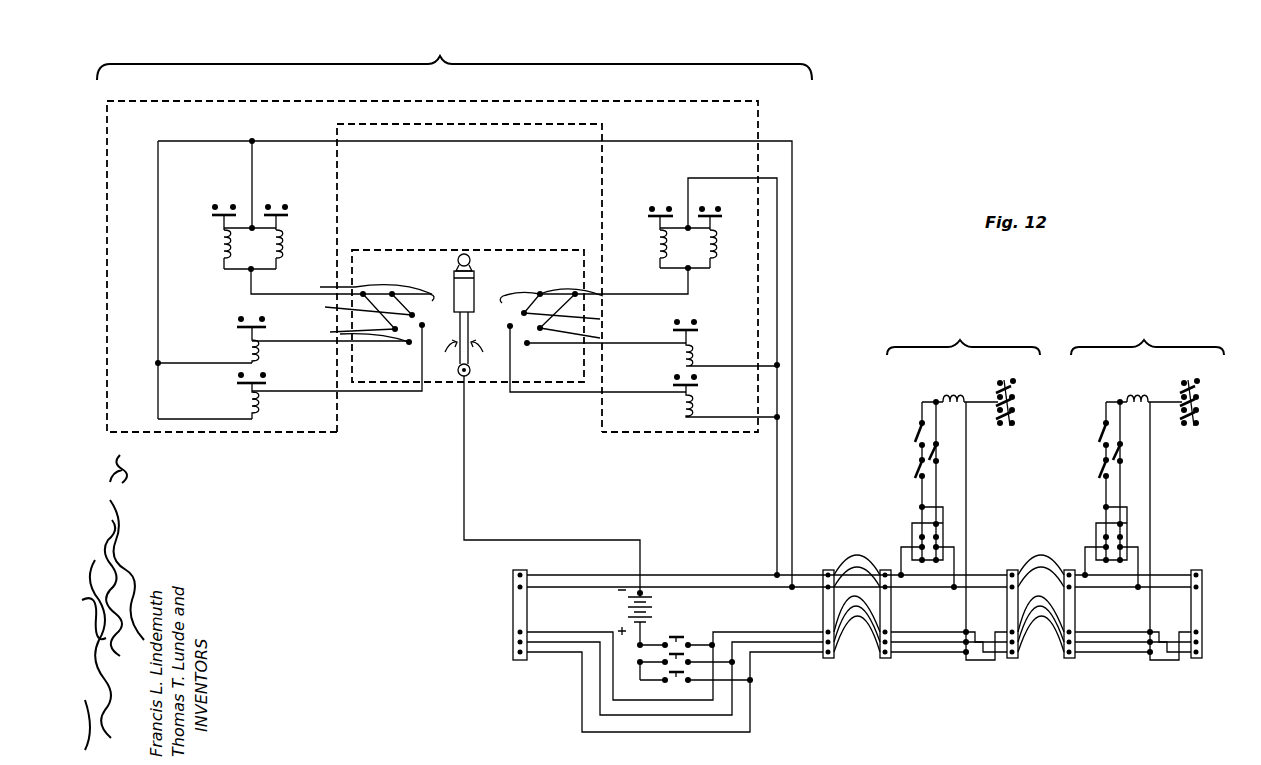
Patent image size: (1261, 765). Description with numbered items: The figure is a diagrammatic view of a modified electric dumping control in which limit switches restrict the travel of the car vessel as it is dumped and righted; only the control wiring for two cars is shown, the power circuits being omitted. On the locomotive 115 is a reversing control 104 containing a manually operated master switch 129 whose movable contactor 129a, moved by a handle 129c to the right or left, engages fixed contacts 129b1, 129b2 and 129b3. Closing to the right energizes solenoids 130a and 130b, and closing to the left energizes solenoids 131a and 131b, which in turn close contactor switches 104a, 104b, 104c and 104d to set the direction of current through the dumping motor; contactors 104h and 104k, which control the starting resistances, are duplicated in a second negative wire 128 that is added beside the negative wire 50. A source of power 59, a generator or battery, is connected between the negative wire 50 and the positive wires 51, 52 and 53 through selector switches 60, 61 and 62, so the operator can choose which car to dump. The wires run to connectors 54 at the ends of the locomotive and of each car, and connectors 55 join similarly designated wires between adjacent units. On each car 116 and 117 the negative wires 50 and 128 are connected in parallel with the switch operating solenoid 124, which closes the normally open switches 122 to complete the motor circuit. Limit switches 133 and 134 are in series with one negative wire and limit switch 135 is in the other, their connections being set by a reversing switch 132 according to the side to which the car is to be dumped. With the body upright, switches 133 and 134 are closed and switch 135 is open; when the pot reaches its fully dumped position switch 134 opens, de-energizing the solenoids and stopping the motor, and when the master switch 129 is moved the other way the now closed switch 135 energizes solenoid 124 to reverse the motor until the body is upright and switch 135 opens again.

The locomotive 115 is at (454, 57).
The reversing control 104 is at (548, 101).
The contactor switch 104a is at (646, 206).
The contactor switch 104b is at (210, 209).
The contactor switch 104c is at (303, 191).
The contactor switch 104d is at (727, 199).
The contactor 104h is at (236, 384).
The contactor 104k is at (236, 325).
The solenoid 131a is at (222, 240).
The solenoid 131b is at (279, 244).
The solenoid 130a is at (656, 242).
The solenoid 130b is at (715, 256).
The master switch 129 is at (480, 248).
The movable contactor 129a is at (480, 303).
The fixed contact 129b1 is at (605, 300).
The fixed contact 129b2 is at (330, 308).
The fixed contact 129b3 is at (336, 328).
The handle 129c is at (456, 249).
The second negative wire 128 is at (726, 178).
The negative wire 50 is at (794, 252).
The positive wire 51 is at (627, 732).
The positive wire 52 is at (676, 716).
The positive wire 53 is at (728, 733).
The connector 54 is at (519, 662).
The connector 55 is at (945, 597).
The source of power 59 is at (630, 602).
The switch 60 is at (684, 636).
The switch 61 is at (662, 658).
The switch 62 is at (678, 682).
The car 116 is at (963, 484).
The car 117 is at (1147, 484).
The solenoid 124 is at (950, 398).
The normally open switch 122 is at (1004, 428).
The reversing switch 132 is at (912, 540).
The limit switch 133 is at (916, 466).
The limit switch 134 is at (916, 431).
The limit switch 135 is at (942, 452).